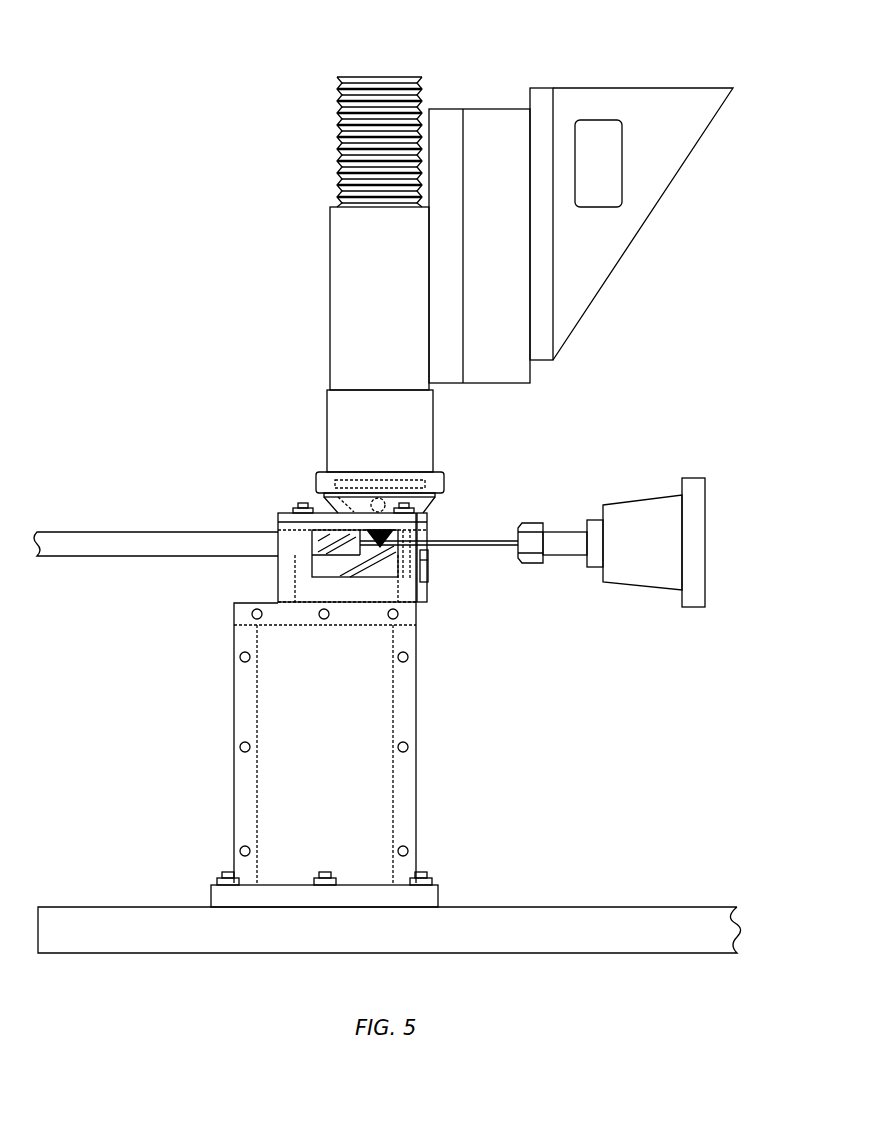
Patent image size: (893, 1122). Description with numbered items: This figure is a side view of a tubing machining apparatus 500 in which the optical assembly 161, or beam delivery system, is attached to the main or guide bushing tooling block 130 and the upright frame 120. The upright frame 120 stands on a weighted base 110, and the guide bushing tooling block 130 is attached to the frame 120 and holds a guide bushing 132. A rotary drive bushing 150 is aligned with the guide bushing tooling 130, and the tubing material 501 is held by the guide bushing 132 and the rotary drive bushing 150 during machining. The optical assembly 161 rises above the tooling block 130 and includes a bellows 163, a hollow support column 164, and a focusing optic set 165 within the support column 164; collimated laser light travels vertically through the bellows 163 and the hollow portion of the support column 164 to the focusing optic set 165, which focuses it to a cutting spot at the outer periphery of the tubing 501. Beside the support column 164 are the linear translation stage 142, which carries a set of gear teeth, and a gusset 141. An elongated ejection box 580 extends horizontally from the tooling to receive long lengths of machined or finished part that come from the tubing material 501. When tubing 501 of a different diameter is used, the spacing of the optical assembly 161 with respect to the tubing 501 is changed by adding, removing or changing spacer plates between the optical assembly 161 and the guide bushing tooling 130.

The optical assembly 161 is at (128, 52).
The tubing machining apparatus 500 is at (194, 440).
The bellows 163 is at (337, 135).
The support column 164 is at (330, 298).
The linear translation stage 142 is at (497, 109).
The gusset 141 is at (643, 88).
The focusing optic set 165 is at (355, 480).
The guide bushing tooling block 130 is at (425, 498).
The elongated ejection box 580 is at (158, 531).
The guide bushing 132 is at (412, 553).
The tubing material 501 is at (470, 542).
The rotary drive bushing 150 is at (643, 498).
The upright frame 120 is at (417, 742).
The weighted base 110 is at (578, 907).